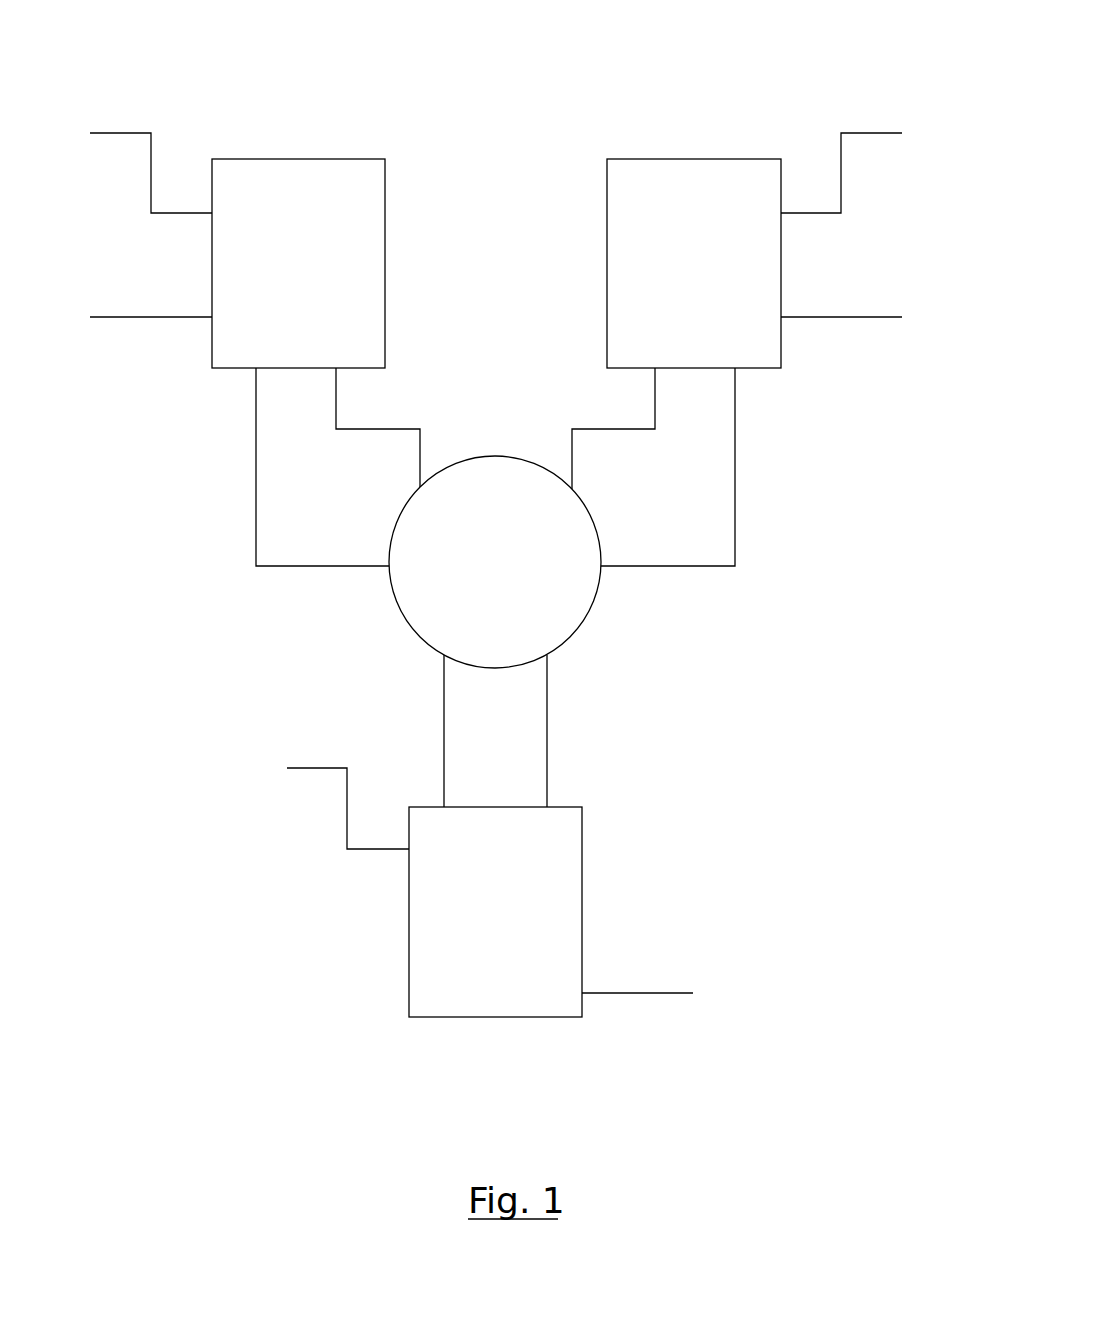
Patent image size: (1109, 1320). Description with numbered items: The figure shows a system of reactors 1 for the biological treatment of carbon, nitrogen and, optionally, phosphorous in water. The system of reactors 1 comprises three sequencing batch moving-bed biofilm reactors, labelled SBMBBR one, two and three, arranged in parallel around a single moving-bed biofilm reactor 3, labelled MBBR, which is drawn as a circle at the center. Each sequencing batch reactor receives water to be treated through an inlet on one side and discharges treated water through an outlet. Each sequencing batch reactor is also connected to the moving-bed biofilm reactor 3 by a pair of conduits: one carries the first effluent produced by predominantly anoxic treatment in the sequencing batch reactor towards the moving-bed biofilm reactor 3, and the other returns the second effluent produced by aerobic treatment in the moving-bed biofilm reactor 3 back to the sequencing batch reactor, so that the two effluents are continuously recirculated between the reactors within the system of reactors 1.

The system of reactors 1 is at (867, 647).
The moving-bed biofilm reactor 3 is at (590, 610).